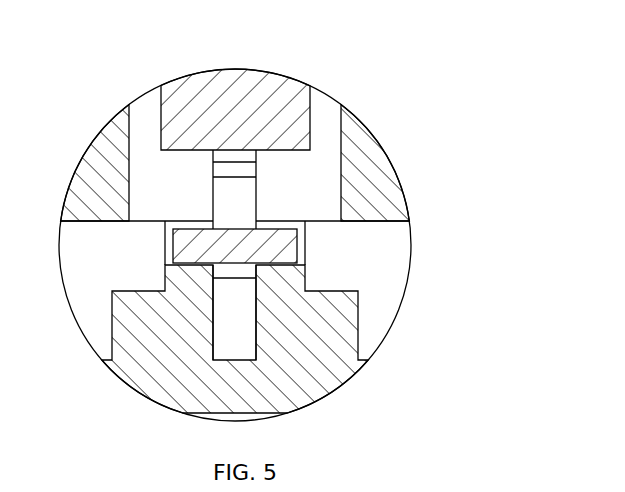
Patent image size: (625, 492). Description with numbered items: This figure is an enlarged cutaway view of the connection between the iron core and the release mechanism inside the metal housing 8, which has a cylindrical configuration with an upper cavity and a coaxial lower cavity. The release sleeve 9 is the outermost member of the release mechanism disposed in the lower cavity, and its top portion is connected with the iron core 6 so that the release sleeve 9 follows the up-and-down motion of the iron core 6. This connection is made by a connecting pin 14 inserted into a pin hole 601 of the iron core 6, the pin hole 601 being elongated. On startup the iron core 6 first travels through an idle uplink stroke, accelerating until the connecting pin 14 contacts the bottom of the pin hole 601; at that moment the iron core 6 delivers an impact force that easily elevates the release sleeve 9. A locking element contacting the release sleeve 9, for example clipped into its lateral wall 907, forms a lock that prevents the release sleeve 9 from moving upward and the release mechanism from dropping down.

The iron core 6 is at (263, 100).
The pin hole 601 is at (235, 200).
The metal housing 8 is at (377, 200).
The connecting pin 14 is at (268, 242).
The release sleeve 9 is at (341, 352).
The lateral wall 907 is at (245, 317).